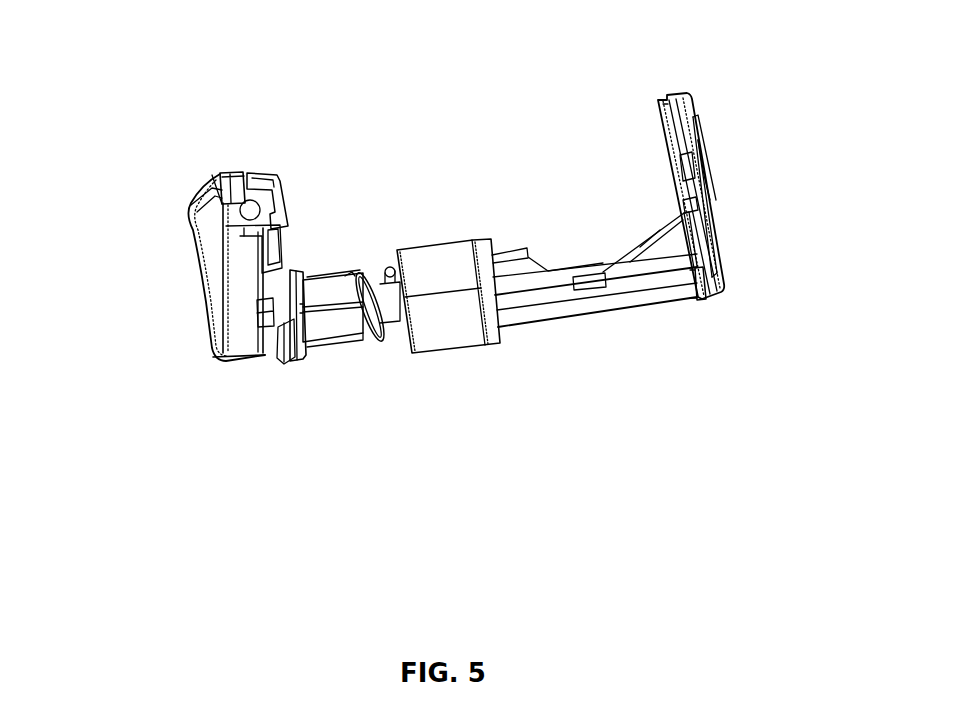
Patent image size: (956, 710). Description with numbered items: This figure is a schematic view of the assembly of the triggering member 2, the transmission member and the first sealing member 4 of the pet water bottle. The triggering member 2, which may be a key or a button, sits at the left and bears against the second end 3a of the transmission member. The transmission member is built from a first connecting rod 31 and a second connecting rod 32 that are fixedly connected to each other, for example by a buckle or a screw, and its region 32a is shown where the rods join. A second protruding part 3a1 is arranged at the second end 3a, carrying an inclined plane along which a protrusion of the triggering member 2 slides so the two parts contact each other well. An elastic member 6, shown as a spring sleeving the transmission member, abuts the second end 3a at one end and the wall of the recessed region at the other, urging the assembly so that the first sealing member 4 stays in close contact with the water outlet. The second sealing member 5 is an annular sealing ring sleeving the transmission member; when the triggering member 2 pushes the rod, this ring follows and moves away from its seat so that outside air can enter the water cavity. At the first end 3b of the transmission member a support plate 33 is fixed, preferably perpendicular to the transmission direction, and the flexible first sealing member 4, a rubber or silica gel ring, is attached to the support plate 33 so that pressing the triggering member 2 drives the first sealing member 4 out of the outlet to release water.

The triggering member 2 is at (247, 292).
The second end 3a is at (300, 350).
The second protruding part 3a1 is at (277, 352).
The first end 3b is at (692, 297).
The first connecting rod 31 is at (402, 312).
The second connecting rod 32 is at (572, 280).
The stepped portion 32a is at (487, 242).
The support plate 33 is at (693, 117).
The first sealing member 4 is at (657, 117).
The second sealing member 5 is at (447, 337).
The elastic member 6 is at (360, 273).